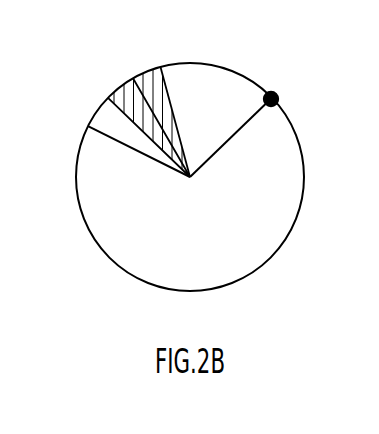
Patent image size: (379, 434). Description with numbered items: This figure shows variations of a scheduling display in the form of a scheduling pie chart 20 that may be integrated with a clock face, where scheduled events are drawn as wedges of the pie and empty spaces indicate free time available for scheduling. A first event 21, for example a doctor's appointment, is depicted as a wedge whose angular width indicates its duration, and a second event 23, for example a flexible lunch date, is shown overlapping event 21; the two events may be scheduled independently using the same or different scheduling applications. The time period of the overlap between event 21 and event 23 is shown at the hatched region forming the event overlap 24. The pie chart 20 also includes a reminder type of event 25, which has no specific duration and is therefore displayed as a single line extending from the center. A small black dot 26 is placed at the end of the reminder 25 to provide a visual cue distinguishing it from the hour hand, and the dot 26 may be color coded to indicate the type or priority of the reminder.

The pie chart 20 is at (72, 282).
The event 21 is at (97, 115).
The event 23 is at (145, 72).
The event overlap 24 is at (120, 92).
The reminder event 25 is at (245, 127).
The dot 26 is at (281, 100).